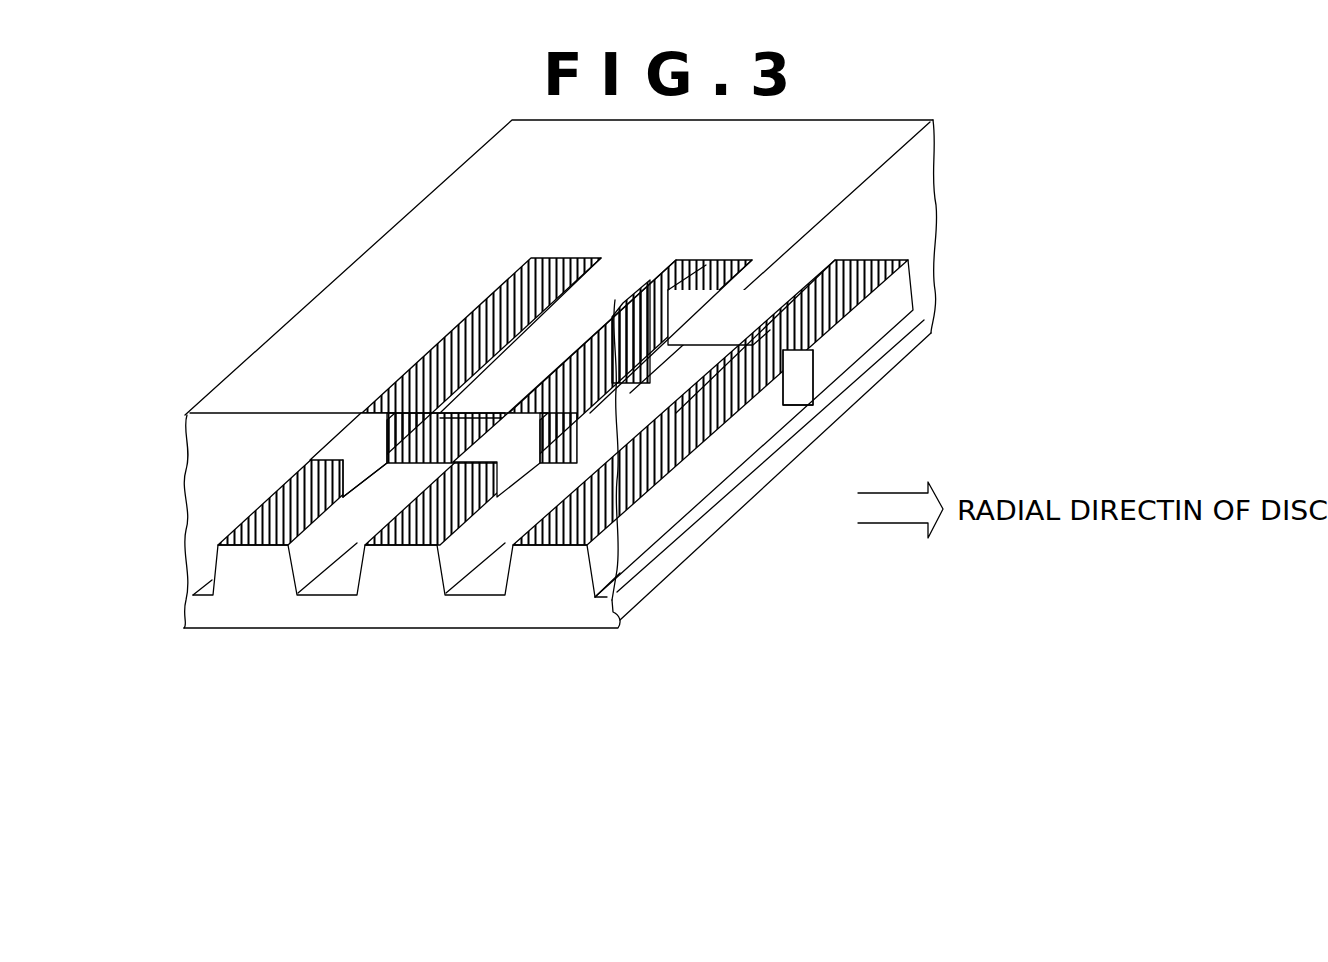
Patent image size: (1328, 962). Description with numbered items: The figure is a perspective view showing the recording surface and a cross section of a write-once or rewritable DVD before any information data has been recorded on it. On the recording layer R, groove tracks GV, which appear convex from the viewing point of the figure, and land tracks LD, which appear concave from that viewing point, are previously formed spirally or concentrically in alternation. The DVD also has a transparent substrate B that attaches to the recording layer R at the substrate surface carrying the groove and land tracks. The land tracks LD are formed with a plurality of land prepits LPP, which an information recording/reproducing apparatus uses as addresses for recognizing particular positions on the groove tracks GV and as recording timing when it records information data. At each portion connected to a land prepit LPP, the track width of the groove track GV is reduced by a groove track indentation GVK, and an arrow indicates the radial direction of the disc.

The groove track GV is at (850, 258).
The groove track indentation GVK is at (572, 370).
The land prepit LPP is at (394, 480).
The land track LD is at (477, 597).
The transparent substrate B is at (237, 460).
The recording layer R is at (247, 608).